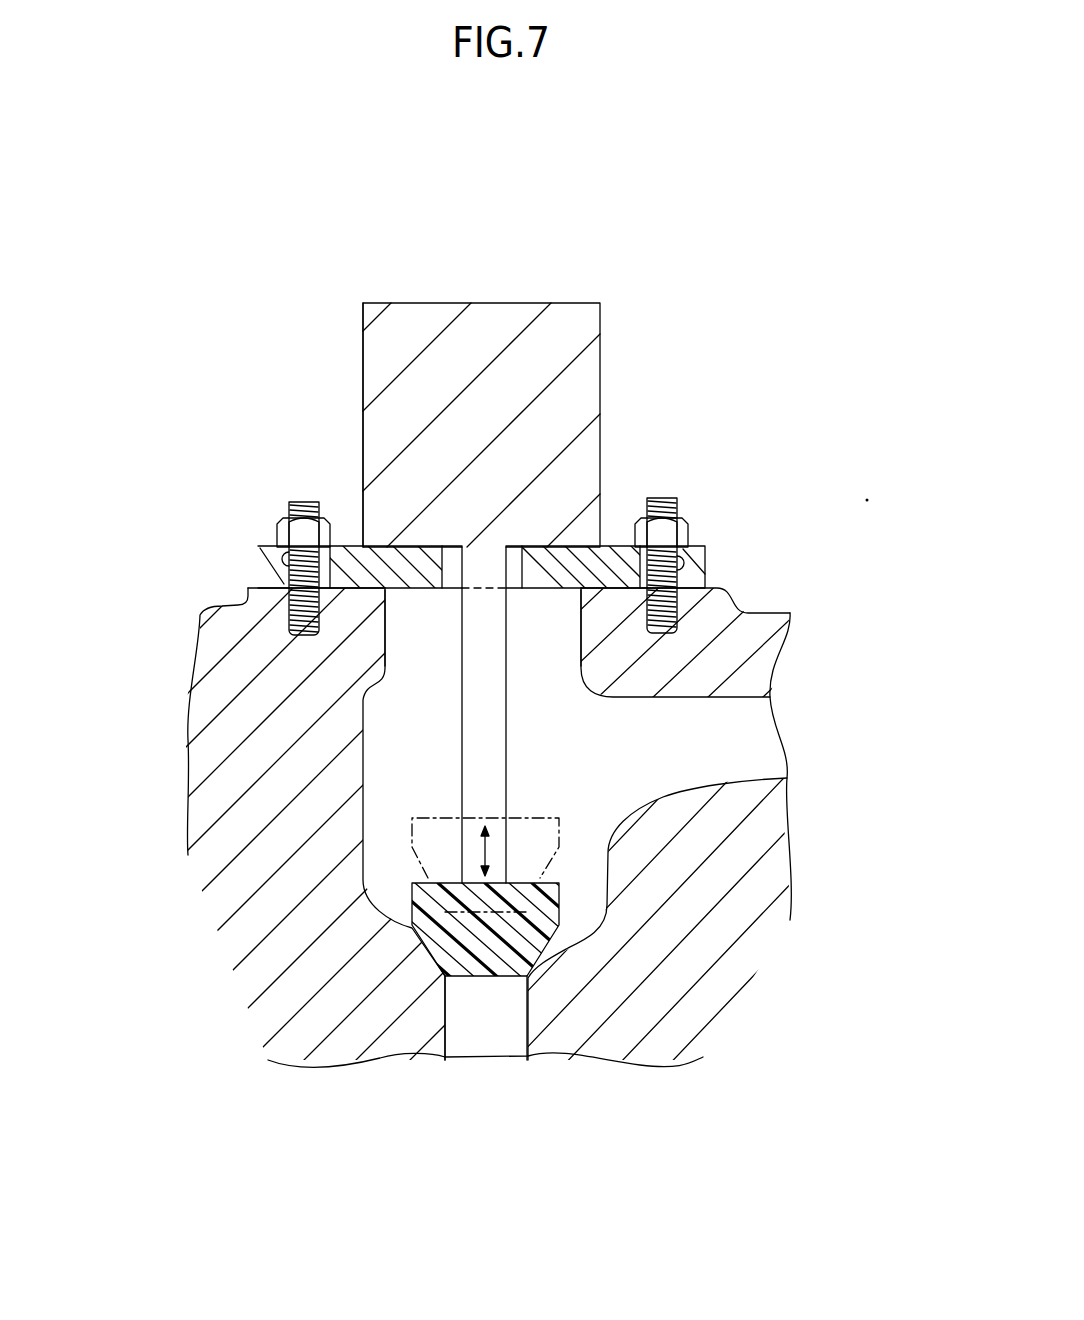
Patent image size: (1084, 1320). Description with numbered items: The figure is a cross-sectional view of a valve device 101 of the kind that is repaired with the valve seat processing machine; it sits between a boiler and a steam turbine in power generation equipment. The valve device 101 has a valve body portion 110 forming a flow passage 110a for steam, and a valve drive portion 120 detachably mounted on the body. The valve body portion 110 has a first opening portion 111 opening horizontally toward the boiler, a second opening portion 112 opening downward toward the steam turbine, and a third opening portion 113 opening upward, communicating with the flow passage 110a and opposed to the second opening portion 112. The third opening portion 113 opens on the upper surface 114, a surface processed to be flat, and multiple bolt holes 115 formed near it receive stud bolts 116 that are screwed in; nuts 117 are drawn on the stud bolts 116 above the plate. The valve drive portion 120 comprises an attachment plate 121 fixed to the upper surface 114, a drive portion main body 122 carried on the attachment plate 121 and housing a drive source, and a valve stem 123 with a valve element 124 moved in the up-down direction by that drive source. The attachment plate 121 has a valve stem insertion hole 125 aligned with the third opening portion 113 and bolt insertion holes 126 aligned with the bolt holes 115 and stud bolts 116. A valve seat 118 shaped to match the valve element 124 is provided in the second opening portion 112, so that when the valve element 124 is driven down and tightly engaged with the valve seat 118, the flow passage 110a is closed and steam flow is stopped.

The valve device 101 is at (710, 218).
The valve body portion 110 is at (765, 612).
The flow passage 110a is at (613, 753).
The first opening portion 111 is at (713, 716).
The second opening portion 112 is at (511, 1020).
The third opening portion 113 is at (580, 620).
The upper surface 114 is at (604, 578).
The bolt hole 115 is at (288, 646).
The stud bolt 116 is at (302, 500).
The nut 117 is at (282, 528).
The valve seat 118 is at (455, 975).
The valve drive portion 120 is at (603, 372).
The attachment plate 121 is at (258, 574).
The drive portion main body 122 is at (363, 336).
The valve stem 123 is at (462, 757).
The valve element 124 is at (410, 836).
The valve stem insertion hole 125 is at (441, 573).
The bolt insertion hole 126 is at (262, 558).